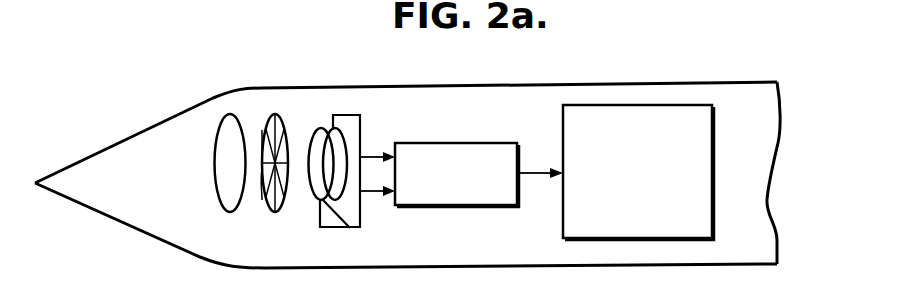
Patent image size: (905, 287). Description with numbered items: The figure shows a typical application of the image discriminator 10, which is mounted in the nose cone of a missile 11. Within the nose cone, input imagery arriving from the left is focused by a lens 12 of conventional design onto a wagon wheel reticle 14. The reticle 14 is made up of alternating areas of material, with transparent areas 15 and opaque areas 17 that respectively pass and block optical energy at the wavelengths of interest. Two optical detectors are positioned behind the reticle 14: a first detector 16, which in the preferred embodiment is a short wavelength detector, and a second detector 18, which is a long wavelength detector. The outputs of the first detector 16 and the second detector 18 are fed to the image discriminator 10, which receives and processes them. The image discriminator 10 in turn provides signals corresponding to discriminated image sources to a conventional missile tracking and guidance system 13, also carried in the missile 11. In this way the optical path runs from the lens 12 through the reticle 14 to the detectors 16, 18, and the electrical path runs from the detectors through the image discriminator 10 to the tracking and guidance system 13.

The image discriminator 10 is at (493, 142).
The missile 11 is at (640, 82).
The lens 12 is at (228, 116).
The missile tracking and guidance system 13 is at (713, 100).
The wagon wheel reticle 14 is at (287, 210).
The transparent areas 15 is at (262, 170).
The first detector 16 is at (315, 129).
The opaque areas 17 is at (263, 130).
The second detector 18 is at (350, 228).